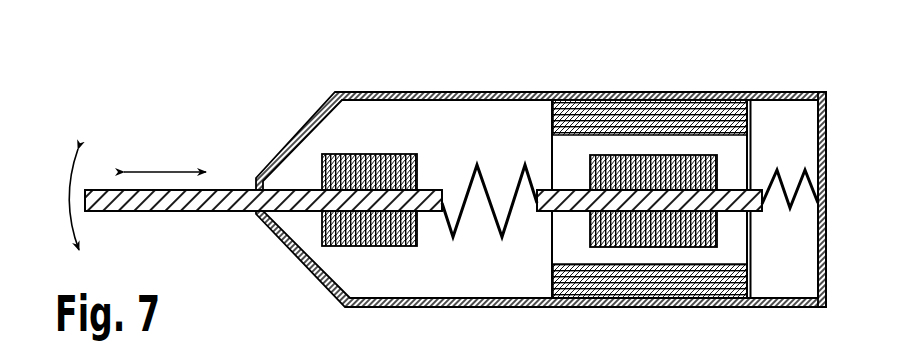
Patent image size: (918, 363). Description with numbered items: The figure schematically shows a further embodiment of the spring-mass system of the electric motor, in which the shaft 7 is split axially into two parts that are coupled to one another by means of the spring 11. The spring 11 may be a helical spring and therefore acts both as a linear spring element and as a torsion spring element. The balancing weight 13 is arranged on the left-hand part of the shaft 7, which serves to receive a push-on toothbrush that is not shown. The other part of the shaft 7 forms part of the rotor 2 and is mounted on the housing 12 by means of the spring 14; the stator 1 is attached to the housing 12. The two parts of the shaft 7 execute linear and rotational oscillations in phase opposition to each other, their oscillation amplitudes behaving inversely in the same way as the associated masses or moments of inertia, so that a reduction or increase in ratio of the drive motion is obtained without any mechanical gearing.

The stator 1 is at (587, 92).
The rotor 2 is at (580, 162).
The shaft 7 is at (236, 190).
The spring 11 is at (468, 182).
The housing 12 is at (806, 92).
The balancing weight 13 is at (375, 155).
The spring 14 is at (803, 184).